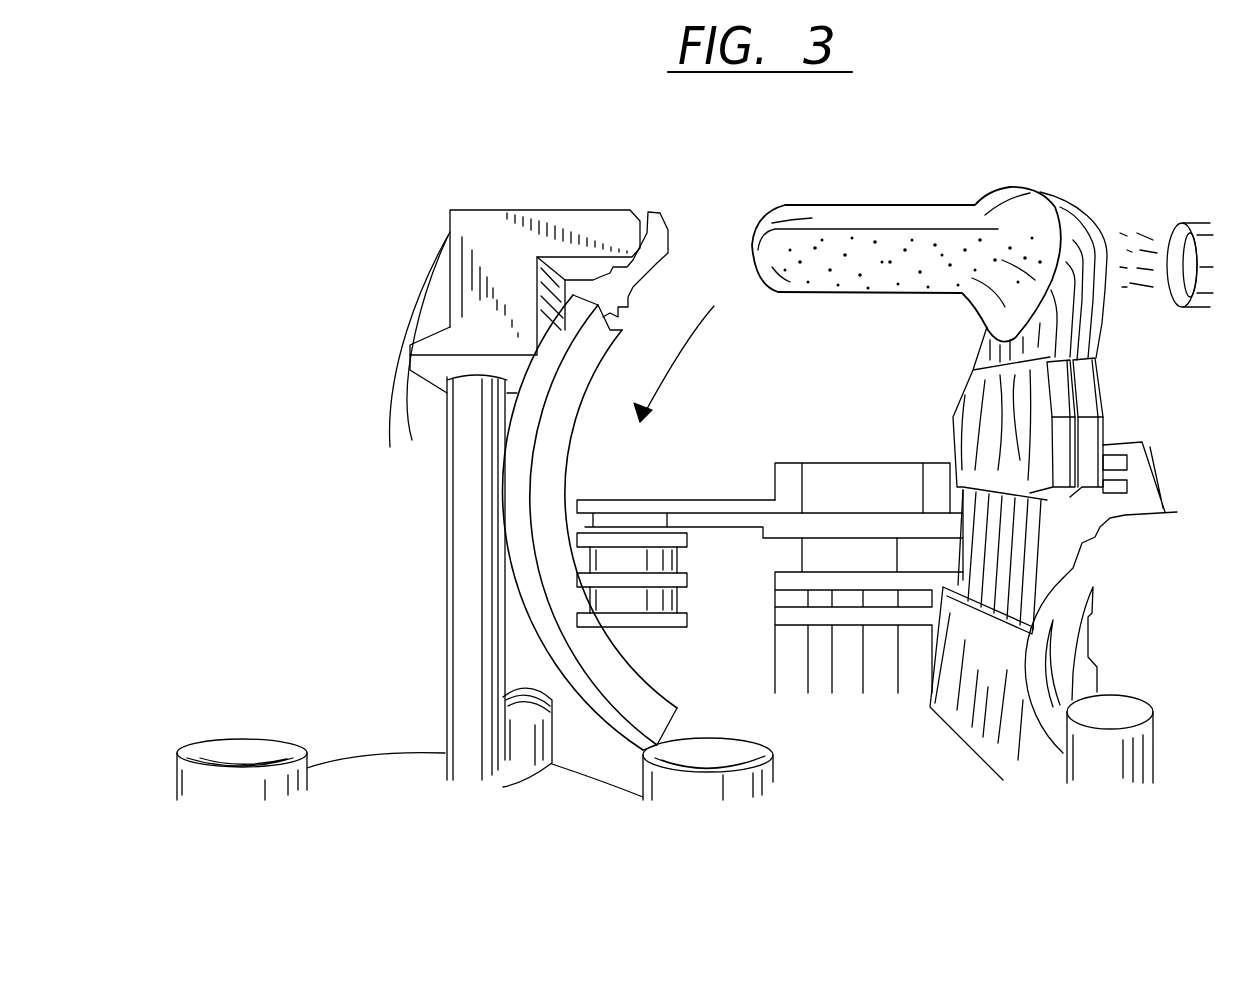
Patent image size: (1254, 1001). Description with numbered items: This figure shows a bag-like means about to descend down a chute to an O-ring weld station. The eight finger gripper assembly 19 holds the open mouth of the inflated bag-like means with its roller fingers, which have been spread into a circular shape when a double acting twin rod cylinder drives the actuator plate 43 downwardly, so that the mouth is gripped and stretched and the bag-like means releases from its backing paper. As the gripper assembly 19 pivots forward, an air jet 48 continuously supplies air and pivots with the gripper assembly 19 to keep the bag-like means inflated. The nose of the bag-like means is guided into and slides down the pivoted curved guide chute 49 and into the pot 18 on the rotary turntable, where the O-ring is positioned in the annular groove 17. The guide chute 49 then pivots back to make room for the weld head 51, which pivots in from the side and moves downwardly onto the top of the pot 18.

The annular groove 17 is at (667, 742).
The pot 18 is at (757, 780).
The gripper assembly 19 is at (1093, 330).
The actuator plate 43 is at (963, 727).
The air jet 48 is at (1120, 245).
The guide chute 49 is at (572, 377).
The weld head 51 is at (848, 483).